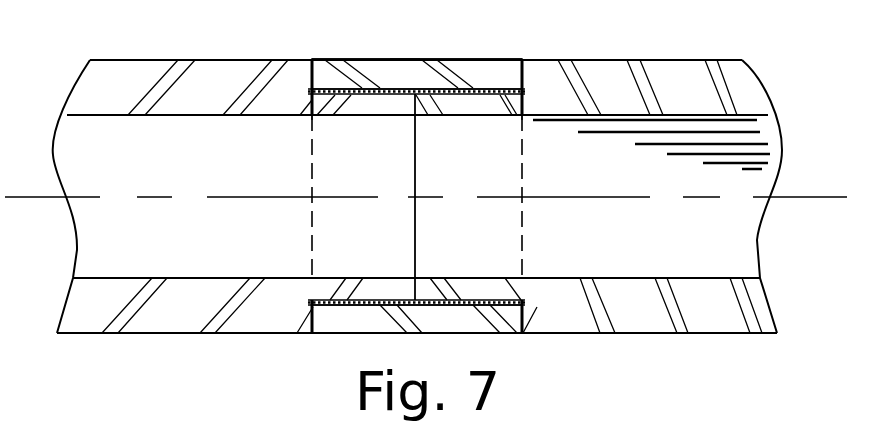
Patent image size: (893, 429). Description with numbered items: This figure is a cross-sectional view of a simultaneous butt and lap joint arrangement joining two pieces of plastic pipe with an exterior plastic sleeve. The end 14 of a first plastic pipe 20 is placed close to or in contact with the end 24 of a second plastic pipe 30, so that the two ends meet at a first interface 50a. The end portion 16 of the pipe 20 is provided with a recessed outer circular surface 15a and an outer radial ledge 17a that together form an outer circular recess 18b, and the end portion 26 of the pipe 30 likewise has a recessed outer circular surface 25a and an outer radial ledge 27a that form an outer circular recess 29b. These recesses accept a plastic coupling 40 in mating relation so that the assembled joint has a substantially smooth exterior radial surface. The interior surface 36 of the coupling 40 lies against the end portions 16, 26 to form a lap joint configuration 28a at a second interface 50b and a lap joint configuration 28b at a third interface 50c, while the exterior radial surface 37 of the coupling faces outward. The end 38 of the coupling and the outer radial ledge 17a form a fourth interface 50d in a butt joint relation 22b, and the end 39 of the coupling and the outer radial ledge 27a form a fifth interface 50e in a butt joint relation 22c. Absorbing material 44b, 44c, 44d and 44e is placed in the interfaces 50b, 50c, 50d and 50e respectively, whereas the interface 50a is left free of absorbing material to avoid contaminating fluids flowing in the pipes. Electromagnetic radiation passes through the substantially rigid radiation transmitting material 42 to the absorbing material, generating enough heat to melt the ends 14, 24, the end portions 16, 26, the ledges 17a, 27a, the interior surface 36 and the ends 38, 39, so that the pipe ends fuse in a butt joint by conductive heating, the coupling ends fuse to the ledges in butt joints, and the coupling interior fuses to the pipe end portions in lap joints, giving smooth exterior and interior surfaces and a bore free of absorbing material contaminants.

The first component piece 20 is at (62, 152).
The second component piece 30 is at (674, 185).
The radiation transmitting material 42 is at (123, 64).
The butt joint relation 22b is at (318, 62).
The butt joint relation 22c is at (527, 64).
The absorbing material 44b is at (385, 88).
The absorbing material 44c is at (505, 80).
The absorbing material 44d is at (311, 62).
The absorbing material 44e is at (524, 62).
The outer circular recess 18b is at (351, 58).
The outer circular recess 29b is at (466, 58).
The plastic coupling 40 is at (411, 61).
The outer radial ledge 17a is at (298, 78).
The recessed outer circular surface 15a is at (406, 92).
The recessed outer circular surface 25a is at (494, 92).
The outer radial ledge 27a is at (524, 98).
The lap joint configuration 28a is at (314, 114).
The lap joint configuration 28b is at (522, 116).
The first interface 50a is at (408, 96).
The end portion 16 is at (400, 187).
The end portion 26 is at (428, 187).
The end 14 is at (412, 282).
The end 24 is at (418, 282).
The second interface 50b is at (410, 300).
The third interface 50c is at (514, 298).
The fourth interface 50d is at (311, 308).
The fifth interface 50e is at (527, 314).
The interior surface 36 is at (462, 308).
The end 38 is at (315, 315).
The exterior radial surface 37 is at (465, 333).
The end 39 is at (498, 333).